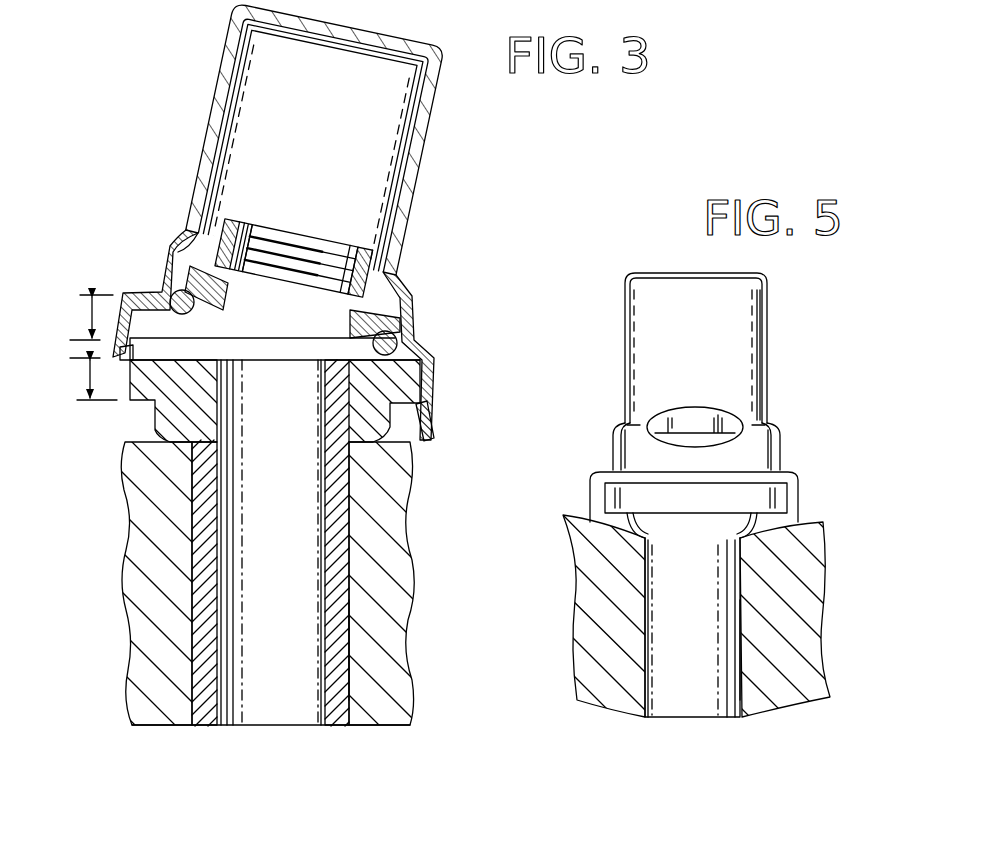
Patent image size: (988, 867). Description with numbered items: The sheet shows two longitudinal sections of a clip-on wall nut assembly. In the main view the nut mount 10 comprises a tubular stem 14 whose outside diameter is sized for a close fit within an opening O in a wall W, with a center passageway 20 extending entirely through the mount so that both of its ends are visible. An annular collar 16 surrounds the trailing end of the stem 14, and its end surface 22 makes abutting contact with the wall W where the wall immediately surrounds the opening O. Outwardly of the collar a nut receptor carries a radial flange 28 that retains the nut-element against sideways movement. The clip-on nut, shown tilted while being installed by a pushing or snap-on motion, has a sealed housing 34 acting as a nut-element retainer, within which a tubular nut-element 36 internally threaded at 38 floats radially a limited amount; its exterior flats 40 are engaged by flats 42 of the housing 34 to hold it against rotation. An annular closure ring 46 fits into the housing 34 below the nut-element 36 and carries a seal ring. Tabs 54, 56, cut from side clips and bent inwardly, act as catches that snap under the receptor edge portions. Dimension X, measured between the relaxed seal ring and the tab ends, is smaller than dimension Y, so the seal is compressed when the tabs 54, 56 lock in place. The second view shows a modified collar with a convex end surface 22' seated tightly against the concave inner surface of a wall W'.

In FIG. 3, the nut mount 10 is at (267, 568).
In FIG. 5, the tubular stem 14 is at (685, 705).
In FIG. 5, the annular collar 16 is at (695, 530).
In FIG. 3, the center passageway 20 is at (305, 500).
In FIG. 3, the end surface 22 is at (245, 409).
In FIG. 5, the convex end surface 22' is at (725, 490).
In FIG. 3, the radial flange 28 is at (303, 347).
In FIG. 3, the sealed housing 34 is at (216, 82).
In FIG. 5, the sealed housing 34 is at (706, 324).
In FIG. 3, the nut-element 36 is at (337, 240).
In FIG. 3, the internal threads 38 is at (250, 232).
In FIG. 3, the flats 40 is at (192, 250).
In FIG. 3, the flats 42 is at (164, 272).
In FIG. 5, the flats 42 is at (683, 415).
In FIG. 3, the annular closure ring 46 is at (225, 296).
In FIG. 3, the tab 54 is at (127, 365).
In FIG. 3, the tab 56 is at (410, 413).
In FIG. 3, the opening O is at (347, 645).
In FIG. 5, the opening O is at (737, 700).
In FIG. 3, the wall W is at (290, 583).
In FIG. 5, the wall W' is at (696, 634).
In FIG. 3, the dimension X is at (80, 300).
In FIG. 3, the dimension Y is at (80, 375).